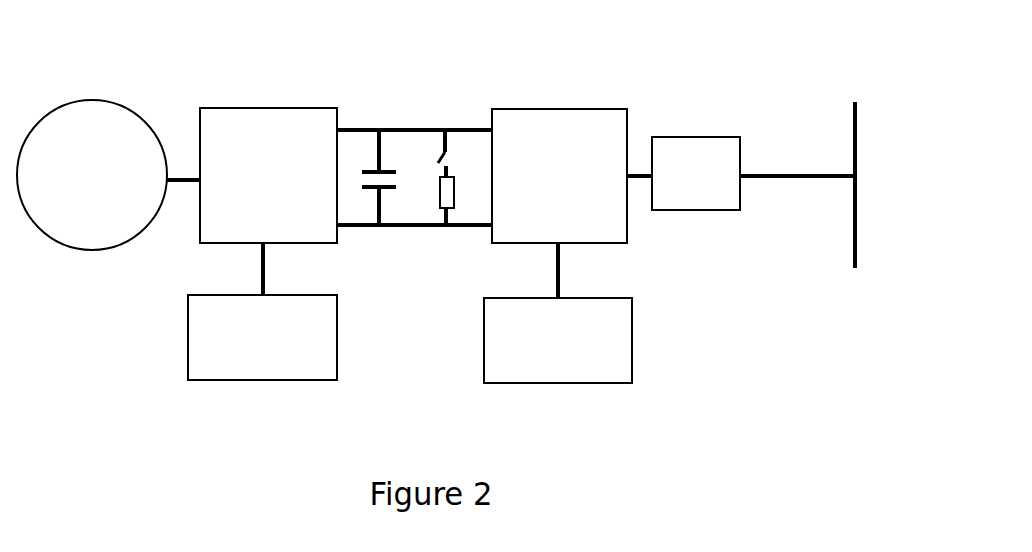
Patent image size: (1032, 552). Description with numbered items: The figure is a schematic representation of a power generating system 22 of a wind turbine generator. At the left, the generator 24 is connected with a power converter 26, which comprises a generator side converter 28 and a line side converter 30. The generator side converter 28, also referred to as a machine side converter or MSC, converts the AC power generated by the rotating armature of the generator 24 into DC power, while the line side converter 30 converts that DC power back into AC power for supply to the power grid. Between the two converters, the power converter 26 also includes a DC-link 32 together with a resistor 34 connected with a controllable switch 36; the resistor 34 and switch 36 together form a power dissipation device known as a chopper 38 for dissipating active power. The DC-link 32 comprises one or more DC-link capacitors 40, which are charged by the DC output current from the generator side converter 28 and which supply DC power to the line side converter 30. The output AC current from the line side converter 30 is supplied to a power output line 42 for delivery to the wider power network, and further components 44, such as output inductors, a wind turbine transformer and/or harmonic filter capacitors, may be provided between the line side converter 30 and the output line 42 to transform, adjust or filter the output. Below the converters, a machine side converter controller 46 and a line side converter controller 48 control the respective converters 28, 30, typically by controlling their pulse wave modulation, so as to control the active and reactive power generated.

The power generating system 22 is at (738, 385).
The generator 24 is at (92, 250).
The power converter 26 is at (397, 80).
The generator side converter 28 is at (337, 247).
The line side converter 30 is at (627, 245).
The DC-link 32 is at (395, 212).
The resistor 34 is at (452, 180).
The controllable switch 36 is at (436, 160).
The chopper 38 is at (463, 212).
The DC-link capacitor 40 is at (372, 168).
The power output line 42 is at (857, 258).
The further components 44 is at (714, 211).
The machine side converter controller 46 is at (337, 337).
The line side converter controller 48 is at (632, 345).